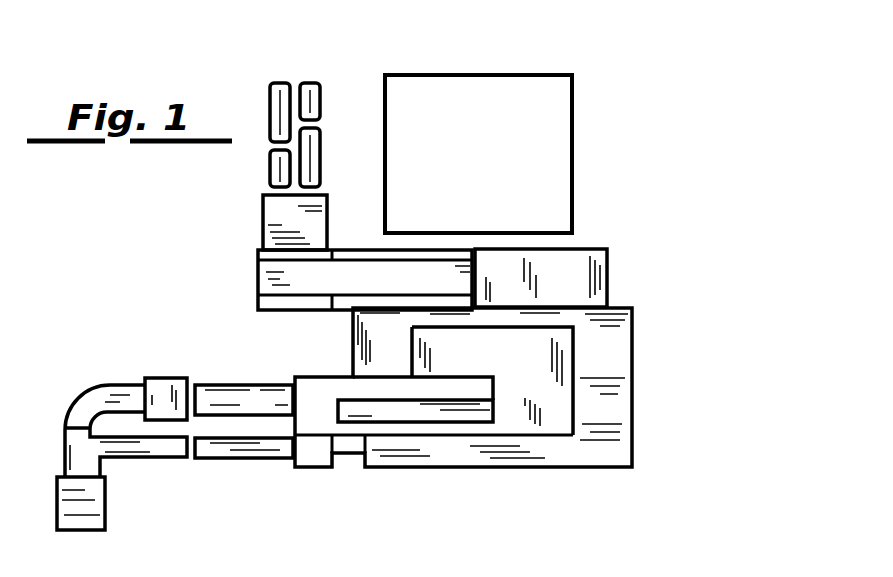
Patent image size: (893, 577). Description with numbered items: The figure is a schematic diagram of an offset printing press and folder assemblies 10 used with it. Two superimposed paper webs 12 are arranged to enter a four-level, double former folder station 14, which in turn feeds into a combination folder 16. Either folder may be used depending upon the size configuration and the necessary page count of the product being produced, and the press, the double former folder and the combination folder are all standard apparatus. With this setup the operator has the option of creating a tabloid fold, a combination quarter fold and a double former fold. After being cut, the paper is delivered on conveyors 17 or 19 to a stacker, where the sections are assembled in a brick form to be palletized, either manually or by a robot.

The offset printing press and folder assemblies 10 is at (615, 162).
The paper webs 12 is at (512, 75).
The four-level, double former folder station 14 is at (607, 272).
The combination folder 16 is at (632, 365).
The conveyor 17 is at (250, 160).
The conveyor 19 is at (158, 372).